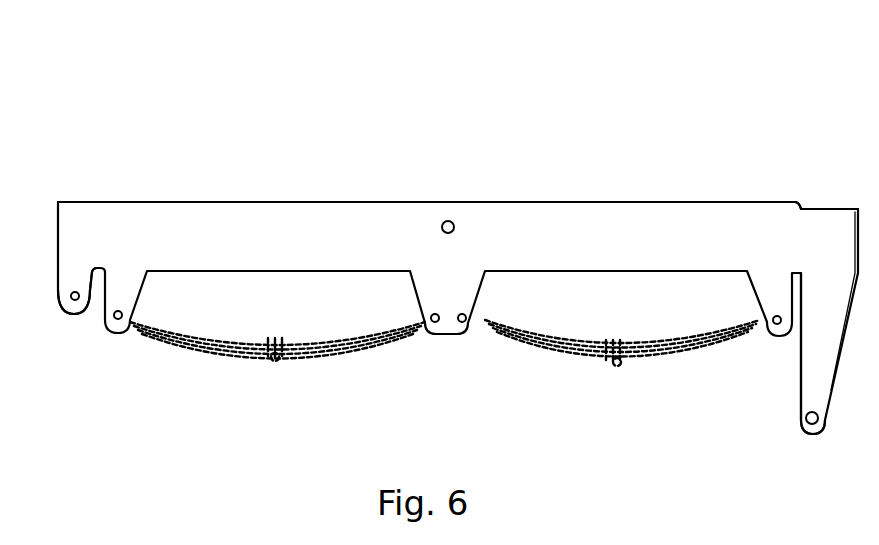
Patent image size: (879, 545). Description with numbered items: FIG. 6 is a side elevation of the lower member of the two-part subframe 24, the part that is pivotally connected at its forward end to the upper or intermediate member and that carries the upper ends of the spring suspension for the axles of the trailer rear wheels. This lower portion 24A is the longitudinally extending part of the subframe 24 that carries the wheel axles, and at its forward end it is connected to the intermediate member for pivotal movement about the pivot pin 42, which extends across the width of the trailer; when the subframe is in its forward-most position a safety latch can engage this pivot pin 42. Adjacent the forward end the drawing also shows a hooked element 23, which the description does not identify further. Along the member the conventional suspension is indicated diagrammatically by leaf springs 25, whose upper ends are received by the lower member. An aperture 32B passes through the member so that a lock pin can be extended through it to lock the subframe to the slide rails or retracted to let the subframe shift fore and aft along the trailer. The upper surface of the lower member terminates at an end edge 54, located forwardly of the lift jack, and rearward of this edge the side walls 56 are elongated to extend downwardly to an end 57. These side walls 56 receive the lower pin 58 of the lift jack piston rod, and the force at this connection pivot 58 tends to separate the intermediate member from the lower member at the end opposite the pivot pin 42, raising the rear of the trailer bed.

The subframe 24 is at (557, 171).
The lower portion 24A is at (248, 203).
The hook portion 23 is at (74, 313).
The pivot pin 42 is at (72, 294).
The aperture 32B is at (452, 233).
The leaf springs 25 is at (234, 351).
The end edge 54 is at (800, 209).
The side walls 56 is at (806, 361).
The lower pin 58 is at (806, 418).
The end 57 is at (808, 434).